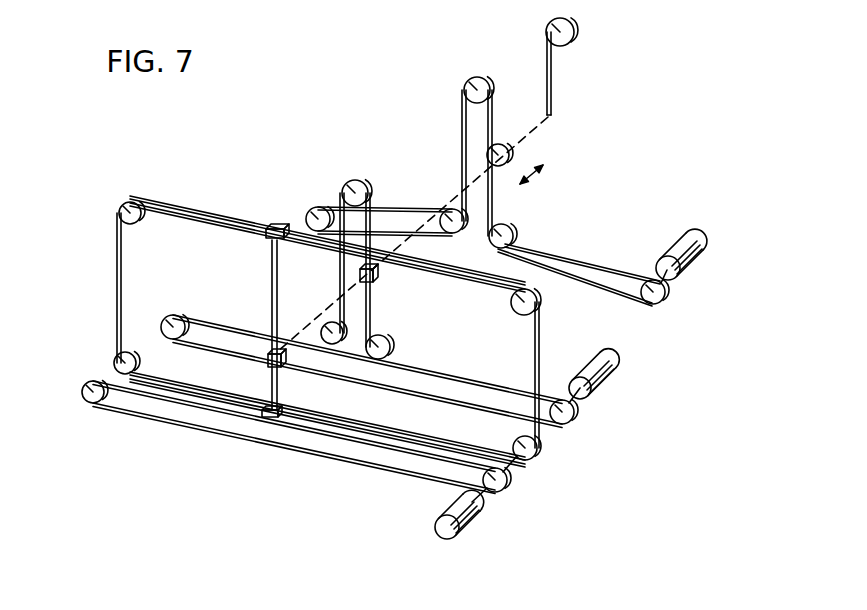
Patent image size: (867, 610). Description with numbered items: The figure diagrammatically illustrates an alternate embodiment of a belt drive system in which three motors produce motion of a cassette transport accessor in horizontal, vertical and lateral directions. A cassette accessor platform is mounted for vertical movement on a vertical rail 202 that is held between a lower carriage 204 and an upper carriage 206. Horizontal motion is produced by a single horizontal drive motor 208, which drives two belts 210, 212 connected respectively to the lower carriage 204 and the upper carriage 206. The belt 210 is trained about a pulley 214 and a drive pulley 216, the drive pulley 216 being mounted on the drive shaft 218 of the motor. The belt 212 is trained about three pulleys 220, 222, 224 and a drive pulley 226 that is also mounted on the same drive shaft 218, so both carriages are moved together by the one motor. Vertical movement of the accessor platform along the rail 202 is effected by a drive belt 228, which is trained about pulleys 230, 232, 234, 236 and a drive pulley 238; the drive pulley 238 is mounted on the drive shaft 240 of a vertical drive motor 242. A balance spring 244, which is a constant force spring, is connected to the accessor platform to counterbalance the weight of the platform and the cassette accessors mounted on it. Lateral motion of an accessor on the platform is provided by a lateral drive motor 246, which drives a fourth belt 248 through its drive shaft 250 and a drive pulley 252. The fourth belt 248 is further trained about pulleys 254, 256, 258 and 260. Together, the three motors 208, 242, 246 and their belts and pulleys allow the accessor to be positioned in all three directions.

The vertical rail 202 is at (290, 386).
The lower carriage 204 is at (268, 418).
The upper carriage 206 is at (274, 228).
The horizontal drive motor 208 is at (441, 514).
The belt 210 is at (295, 449).
The belt 212 is at (222, 219).
The pulley 214 is at (84, 386).
The drive pulley 216 is at (506, 490).
The drive shaft 218 is at (486, 502).
The pulley 220 is at (519, 312).
The pulley 222 is at (132, 203).
The pulley 224 is at (118, 357).
The drive pulley 226 is at (540, 462).
The drive belt 228 is at (432, 368).
The pulley 230 is at (384, 340).
The pulley 232 is at (361, 183).
The pulley 234 is at (326, 325).
The pulley 236 is at (173, 316).
The drive pulley 238 is at (574, 422).
The drive shaft 240 is at (580, 398).
The vertical drive motor 242 is at (590, 358).
The balance spring 244 is at (550, 30).
The lateral drive motor 246 is at (683, 238).
The fourth belt 248 is at (574, 258).
The drive shaft 250 is at (674, 276).
The drive pulley 252 is at (662, 303).
The pulley 254 is at (509, 230).
The pulley 256 is at (467, 81).
The pulley 258 is at (447, 212).
The pulley 260 is at (318, 207).